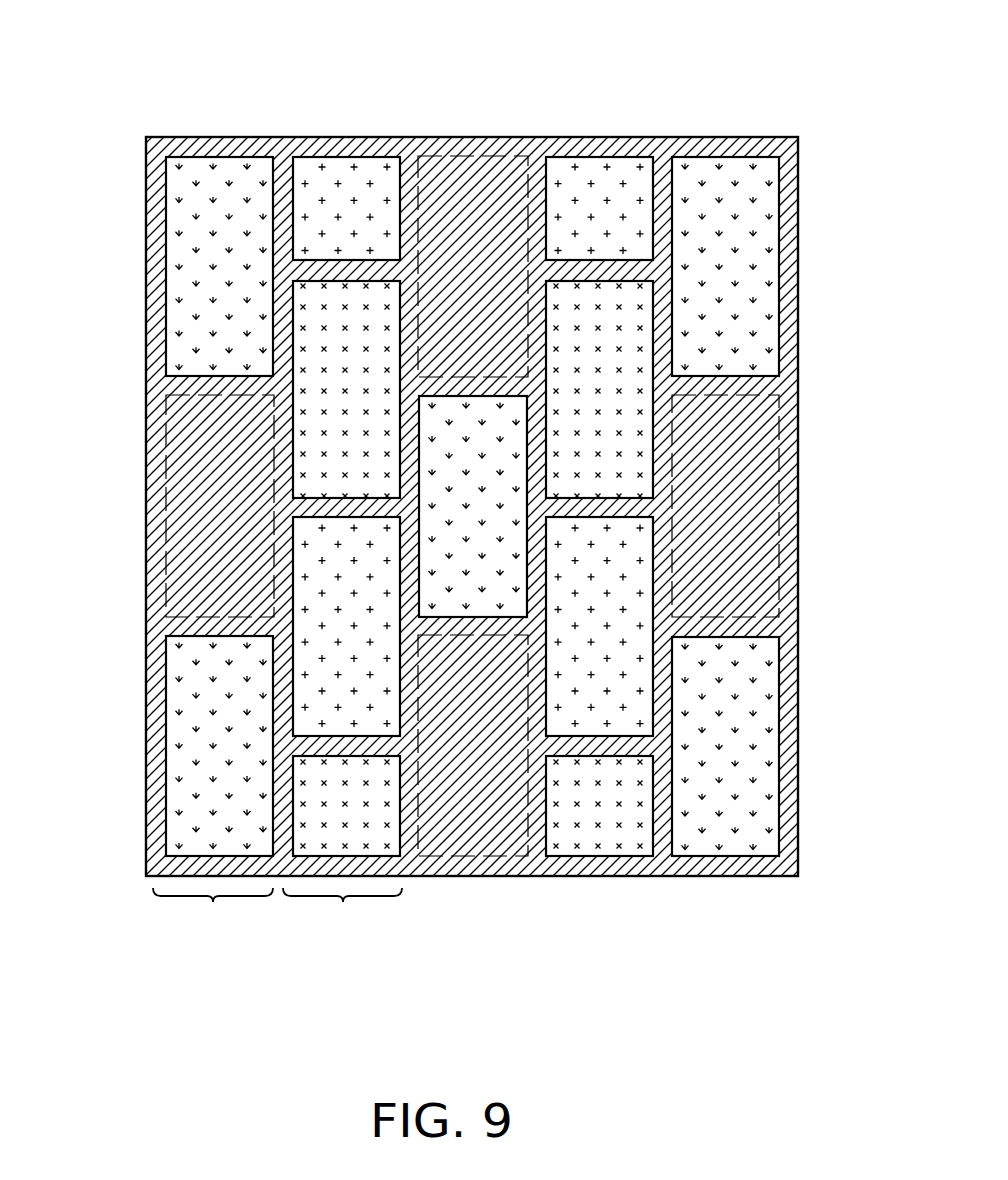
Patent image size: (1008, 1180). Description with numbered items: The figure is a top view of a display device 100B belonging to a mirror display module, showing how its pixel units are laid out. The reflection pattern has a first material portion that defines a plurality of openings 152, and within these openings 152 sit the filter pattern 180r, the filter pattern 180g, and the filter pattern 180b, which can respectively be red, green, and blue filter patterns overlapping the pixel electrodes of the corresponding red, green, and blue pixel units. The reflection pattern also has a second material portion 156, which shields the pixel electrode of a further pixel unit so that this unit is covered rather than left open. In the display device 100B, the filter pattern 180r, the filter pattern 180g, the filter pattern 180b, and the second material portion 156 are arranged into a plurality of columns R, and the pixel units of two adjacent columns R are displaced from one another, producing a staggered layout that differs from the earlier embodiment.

The display device 100B is at (460, 498).
The openings 152 is at (298, 197).
The second material portion 156 is at (500, 185).
The filter pattern 180g is at (212, 188).
The filter pattern 180r is at (350, 182).
The filter pattern 180b is at (380, 258).
The columns R is at (277, 914).